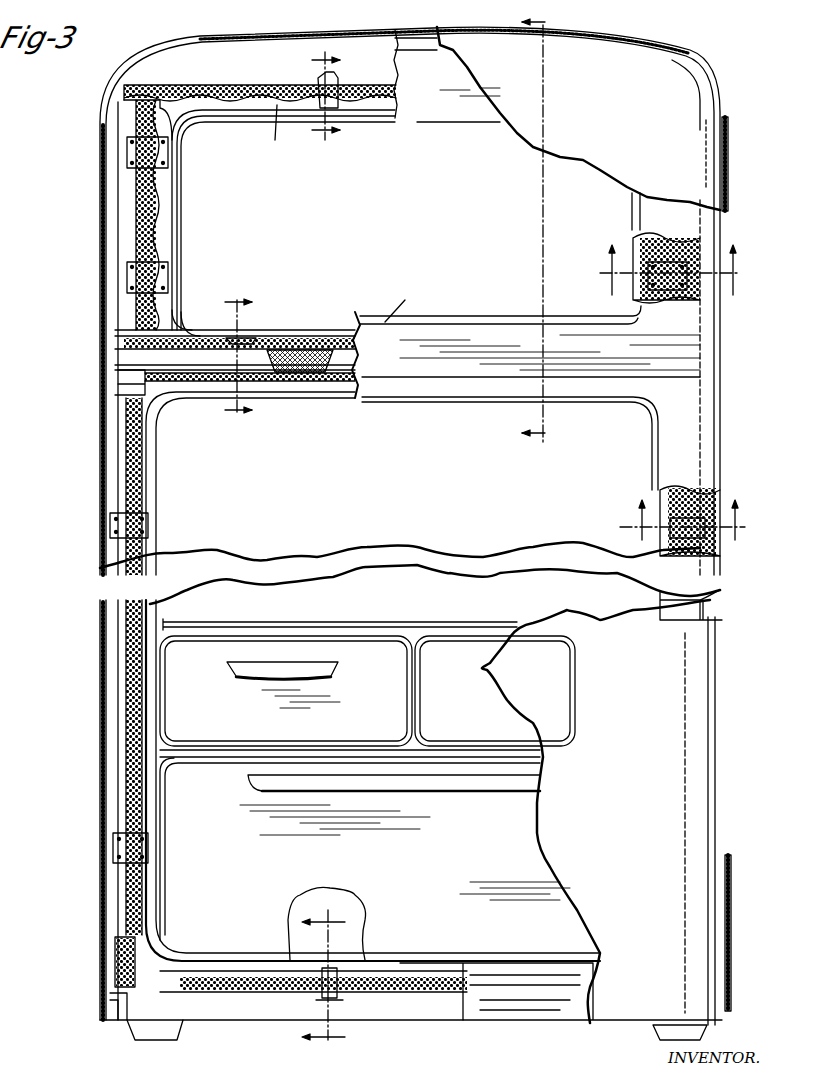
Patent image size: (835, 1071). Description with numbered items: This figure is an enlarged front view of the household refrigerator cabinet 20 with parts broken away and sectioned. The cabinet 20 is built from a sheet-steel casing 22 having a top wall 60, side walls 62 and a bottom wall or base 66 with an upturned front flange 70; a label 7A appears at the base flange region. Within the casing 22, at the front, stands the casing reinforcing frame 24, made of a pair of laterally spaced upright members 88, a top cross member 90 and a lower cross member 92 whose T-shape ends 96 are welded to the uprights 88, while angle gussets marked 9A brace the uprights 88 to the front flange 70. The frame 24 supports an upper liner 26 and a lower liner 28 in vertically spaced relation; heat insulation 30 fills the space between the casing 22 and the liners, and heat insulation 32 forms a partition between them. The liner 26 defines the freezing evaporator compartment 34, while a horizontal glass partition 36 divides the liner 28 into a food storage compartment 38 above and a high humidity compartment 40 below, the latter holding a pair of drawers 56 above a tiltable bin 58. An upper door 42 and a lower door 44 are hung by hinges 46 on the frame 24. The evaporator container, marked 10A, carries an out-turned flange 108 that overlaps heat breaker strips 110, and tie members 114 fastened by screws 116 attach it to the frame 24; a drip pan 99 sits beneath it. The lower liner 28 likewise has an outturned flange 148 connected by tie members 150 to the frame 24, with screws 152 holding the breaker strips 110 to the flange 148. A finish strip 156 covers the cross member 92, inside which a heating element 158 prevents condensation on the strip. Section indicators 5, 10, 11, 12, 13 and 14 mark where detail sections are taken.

The cabinet 20 is at (689, 57).
The casing 22 is at (368, 34).
The casing reinforcing frame 24 is at (284, 43).
The liner 26 is at (253, 88).
The second liner 28 is at (158, 470).
The heat insulation 30 is at (125, 88).
The heat insulation partition 32 is at (185, 382).
The evaporator compartment 34 is at (160, 108).
The horizontal partition 36 is at (432, 622).
The food storage compartment 38 is at (650, 435).
The high humidity compartment 40 is at (363, 925).
The upper door 42 is at (700, 84).
The lower door 44 is at (703, 680).
The hinges 46 is at (730, 128).
The drawers 56 is at (253, 640).
The tiltable bin 58 is at (527, 815).
The top wall 60 is at (236, 42).
The side walls 62 is at (100, 268).
The bottom wall 66 is at (435, 1025).
The front flange 70 is at (195, 1028).
The bottom flange 7A is at (110, 1005).
The upright members 88 is at (108, 222).
The top cross member 90 is at (397, 65).
The lower cross member 92 is at (150, 355).
The mullion 9A is at (145, 383).
The T-shape ends 96 is at (130, 370).
The pan 99 is at (170, 348).
The section line 5 is at (545, 234).
The section line 10 is at (323, 976).
The section line 11 is at (682, 521).
The section line 12 is at (668, 268).
The section line 13 is at (326, 96).
The section line 14 is at (238, 357).
The upper liner 10A is at (378, 118).
The out-turned flange 108 is at (168, 240).
The heat breaker strips 110 is at (477, 105).
The tie members 114 is at (318, 82).
The screws 116 is at (168, 137).
The outturned flange 148 is at (158, 500).
The tie members 150 is at (118, 528).
The screws 152 is at (150, 526).
The finish strip 156 is at (622, 368).
The heating element 158 is at (300, 378).